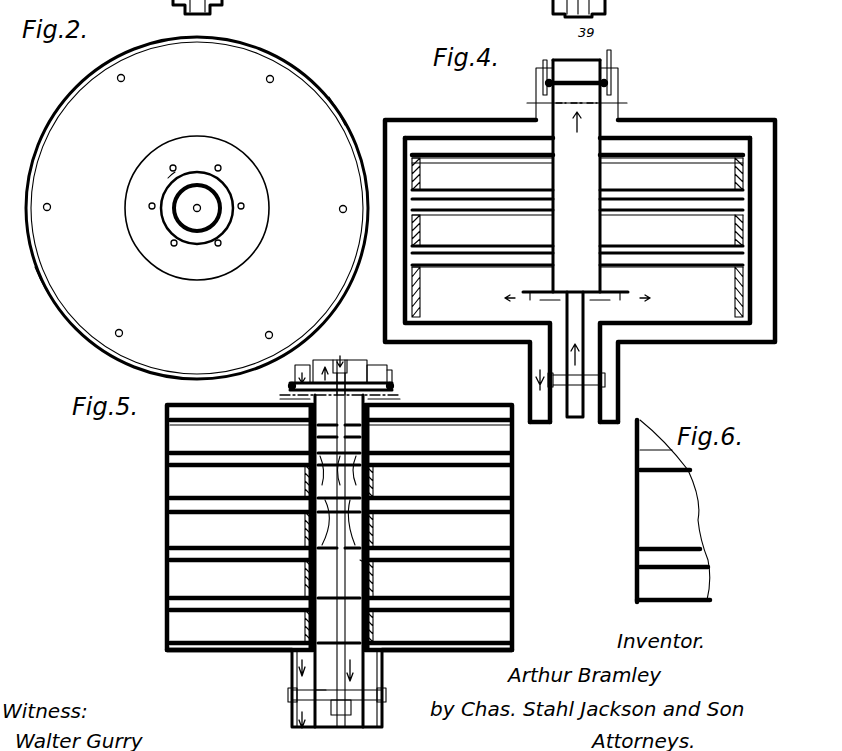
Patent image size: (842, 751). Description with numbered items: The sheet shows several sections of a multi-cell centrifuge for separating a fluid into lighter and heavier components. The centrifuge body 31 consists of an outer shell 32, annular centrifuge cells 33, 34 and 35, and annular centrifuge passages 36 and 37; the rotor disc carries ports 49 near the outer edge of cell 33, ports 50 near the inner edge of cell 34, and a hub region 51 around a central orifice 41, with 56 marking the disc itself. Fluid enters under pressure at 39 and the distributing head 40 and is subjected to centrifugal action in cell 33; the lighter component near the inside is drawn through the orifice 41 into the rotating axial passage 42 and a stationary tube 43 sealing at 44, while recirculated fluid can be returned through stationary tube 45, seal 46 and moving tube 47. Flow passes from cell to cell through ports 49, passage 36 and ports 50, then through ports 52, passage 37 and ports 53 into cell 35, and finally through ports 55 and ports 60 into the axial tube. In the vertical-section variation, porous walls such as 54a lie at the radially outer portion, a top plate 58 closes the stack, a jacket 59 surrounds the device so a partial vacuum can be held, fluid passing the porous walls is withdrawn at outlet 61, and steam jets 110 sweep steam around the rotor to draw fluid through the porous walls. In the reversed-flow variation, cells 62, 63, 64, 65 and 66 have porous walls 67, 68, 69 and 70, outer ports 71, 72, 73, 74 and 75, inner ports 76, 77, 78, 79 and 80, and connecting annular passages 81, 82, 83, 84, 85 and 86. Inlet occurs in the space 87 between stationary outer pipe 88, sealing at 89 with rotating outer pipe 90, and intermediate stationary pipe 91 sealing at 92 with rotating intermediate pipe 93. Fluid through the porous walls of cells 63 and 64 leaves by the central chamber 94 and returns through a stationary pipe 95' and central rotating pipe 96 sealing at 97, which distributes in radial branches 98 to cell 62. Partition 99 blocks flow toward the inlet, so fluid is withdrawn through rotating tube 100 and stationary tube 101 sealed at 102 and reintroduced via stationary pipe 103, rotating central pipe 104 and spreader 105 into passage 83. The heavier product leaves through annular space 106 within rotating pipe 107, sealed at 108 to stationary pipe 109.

In FIG. 2, the centrifuge body 31 is at (262, 53).
In FIG. 5, the centrifuge body 31 is at (166, 475).
In FIG. 6, the centrifuge body 31 is at (636, 473).
In FIG. 2, the outer shell 32 is at (327, 100).
In FIG. 5, the outer shell 32 is at (166, 522).
In FIG. 6, the outer shell 32 is at (645, 497).
In FIG. 4, the annular centrifuge chamber or cell 33 is at (578, 306).
In FIG. 4, the annular centrifuge chamber or cell 34 is at (577, 237).
In FIG. 6, the annular centrifuge chamber or cell 35 is at (648, 436).
In FIG. 4, the annular centrifuge passage 36 is at (478, 266).
In FIG. 6, the annular centrifuge passage 36 is at (640, 562).
In FIG. 4, the annular centrifuge passage 37 is at (500, 203).
In FIG. 6, the annular centrifuge passage 37 is at (640, 458).
In FIG. 2, the inlet 39 is at (205, 14).
In FIG. 4, the inlet 39 is at (575, 420).
In FIG. 4, the distributing head 40 is at (614, 292).
In FIG. 2, the orifice 41 is at (194, 210).
In FIG. 2, the rotating axial passage 42 is at (213, 214).
In FIG. 4, the rotating axial passage 42 is at (576, 176).
In FIG. 4, the stationary tube 43 is at (553, 63).
In FIG. 4, the seal 44 is at (577, 76).
In FIG. 4, the stationary tube 45 is at (607, 424).
In FIG. 4, the seal 46 is at (606, 381).
In FIG. 4, the moving tube 47 is at (602, 354).
In FIG. 2, the ports 49 is at (195, 209).
In FIG. 4, the ports 49 is at (596, 8).
In FIG. 6, the ports 49 is at (653, 590).
In FIG. 2, the ports 50 is at (214, 230).
In FIG. 2, the hub ring 51 is at (173, 175).
In FIG. 4, the ports 52 is at (512, 216).
In FIG. 6, the ports 52 is at (663, 488).
In FIG. 4, the ports 53 is at (700, 198).
In FIG. 4, the porous wall 54a is at (414, 176).
In FIG. 4, the ports 55 is at (577, 174).
In FIG. 2, the disc 56 is at (55, 268).
In FIG. 4, the top plate 58 is at (577, 148).
In FIG. 4, the jacket 59 is at (500, 119).
In FIG. 4, the ports 60 is at (600, 147).
In FIG. 4, the outlet 61 is at (540, 424).
In FIG. 5, the cell 62 is at (340, 465).
In FIG. 5, the cell 63 is at (340, 514).
In FIG. 5, the cell 64 is at (340, 562).
In FIG. 5, the cell 65 is at (340, 605).
In FIG. 5, the cell 66 is at (326, 625).
In FIG. 5, the porous wall 67 is at (318, 487).
In FIG. 5, the porous wall 68 is at (318, 532).
In FIG. 5, the porous wall 69 is at (312, 575).
In FIG. 5, the porous wall 70 is at (312, 625).
In FIG. 5, the ports 71 is at (190, 455).
In FIG. 5, the ports 72 is at (190, 503).
In FIG. 5, the ports 73 is at (341, 534).
In FIG. 5, the ports 74 is at (341, 575).
In FIG. 5, the ports 75 is at (340, 625).
In FIG. 5, the ports 76 is at (295, 418).
In FIG. 5, the ports 77 is at (292, 466).
In FIG. 5, the ports 78 is at (292, 513).
In FIG. 5, the ports 79 is at (285, 560).
In FIG. 5, the ports 80 is at (290, 612).
In FIG. 5, the connecting annular passage 81 is at (223, 412).
In FIG. 5, the connecting annular passage 82 is at (255, 462).
In FIG. 5, the connecting annular passage 83 is at (252, 510).
In FIG. 5, the connecting annular passage 84 is at (357, 535).
In FIG. 5, the connecting annular passage 85 is at (332, 583).
In FIG. 5, the connecting annular passage 86 is at (218, 651).
In FIG. 5, the space 87 is at (295, 373).
In FIG. 5, the stationary outer pipe 88 is at (371, 366).
In FIG. 5, the seal 89 is at (290, 386).
In FIG. 5, the rotating outer pipe 90 is at (296, 395).
In FIG. 5, the intermediate stationary pipe 91 is at (355, 360).
In FIG. 5, the seal 92 is at (380, 378).
In FIG. 5, the rotating intermediate pipe 93 is at (349, 543).
In FIG. 5, the central chamber 94 is at (339, 561).
In FIG. 5, the valve 95' is at (331, 355).
In FIG. 5, the central rotating pipe 96 is at (365, 431).
In FIG. 5, the seal 97 is at (333, 358).
In FIG. 5, the radial branches 98 is at (339, 455).
In FIG. 5, the partition 99 is at (365, 572).
In FIG. 5, the rotating tube 100 is at (383, 665).
In FIG. 5, the stationary tube 101 is at (383, 716).
In FIG. 5, the seal 102 is at (315, 690).
In FIG. 5, the stationary pipe 103 is at (393, 733).
In FIG. 5, the rotating central pipe 104 is at (292, 700).
In FIG. 5, the spreader 105 is at (339, 505).
In FIG. 5, the annular space 106 is at (292, 728).
In FIG. 5, the rotating pipe 107 is at (292, 668).
In FIG. 5, the seal 108 is at (288, 692).
In FIG. 5, the stationary pipe 109 is at (292, 714).
In FIG. 4, the steam jets 110 is at (545, 59).